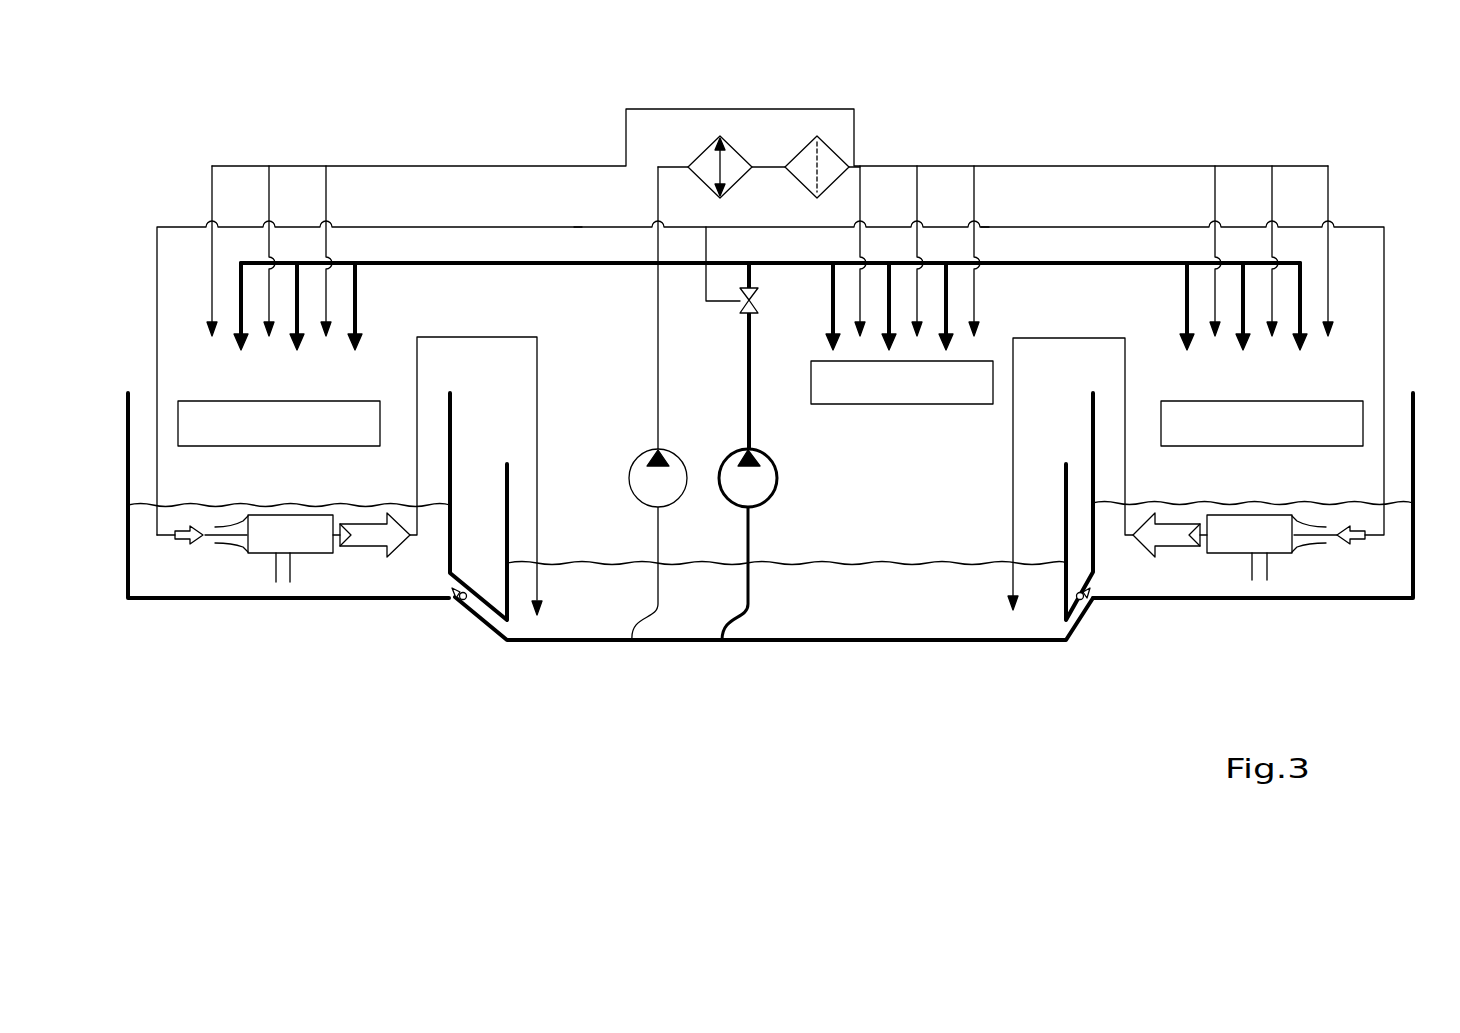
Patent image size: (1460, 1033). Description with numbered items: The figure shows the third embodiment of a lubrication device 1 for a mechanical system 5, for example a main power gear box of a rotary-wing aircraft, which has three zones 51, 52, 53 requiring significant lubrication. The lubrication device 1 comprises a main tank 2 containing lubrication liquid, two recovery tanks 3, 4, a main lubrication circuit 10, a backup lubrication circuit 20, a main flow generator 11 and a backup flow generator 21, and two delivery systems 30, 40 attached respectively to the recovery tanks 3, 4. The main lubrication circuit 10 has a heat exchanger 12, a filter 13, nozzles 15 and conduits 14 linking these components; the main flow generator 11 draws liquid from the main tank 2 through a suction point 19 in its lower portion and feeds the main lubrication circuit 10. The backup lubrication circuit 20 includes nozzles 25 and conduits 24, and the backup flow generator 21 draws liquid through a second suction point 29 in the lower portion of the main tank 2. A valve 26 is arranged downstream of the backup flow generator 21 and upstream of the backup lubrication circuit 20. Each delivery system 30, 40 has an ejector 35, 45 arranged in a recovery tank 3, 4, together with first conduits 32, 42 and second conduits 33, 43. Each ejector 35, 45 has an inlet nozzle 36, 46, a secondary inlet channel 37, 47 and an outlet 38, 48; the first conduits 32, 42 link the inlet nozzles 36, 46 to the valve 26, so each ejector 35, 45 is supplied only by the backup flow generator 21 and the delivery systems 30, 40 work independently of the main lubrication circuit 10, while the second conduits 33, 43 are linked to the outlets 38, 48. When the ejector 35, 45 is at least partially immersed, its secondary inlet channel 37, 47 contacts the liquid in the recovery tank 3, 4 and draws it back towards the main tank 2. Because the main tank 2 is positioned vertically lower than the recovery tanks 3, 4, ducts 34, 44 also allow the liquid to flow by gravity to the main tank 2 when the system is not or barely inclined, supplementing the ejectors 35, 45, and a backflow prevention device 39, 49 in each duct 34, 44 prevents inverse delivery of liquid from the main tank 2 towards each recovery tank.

The lubrication device 1 is at (546, 732).
The main tank 2 is at (835, 644).
The recovery tank 3 is at (1413, 592).
The recovery tank 4 is at (185, 600).
The mechanical system 5 is at (886, 435).
The main lubrication circuit 10 is at (1113, 140).
The main flow generator 11 is at (640, 452).
The heat exchanger 12 is at (703, 153).
The filter 13 is at (797, 153).
The conduits 14 is at (497, 166).
The nozzles 15 is at (322, 328).
The suction point 19 is at (632, 640).
The backup lubrication circuit 20 is at (1103, 250).
The backup flow generator 21 is at (730, 452).
The conduits 24 is at (563, 265).
The nozzles 25 is at (246, 352).
The valve 26 is at (738, 303).
The suction point 29 is at (722, 640).
The delivery system 30 is at (1350, 478).
The first conduit 32 is at (985, 227).
The second conduit 33 is at (1125, 352).
The duct 34 is at (1080, 642).
The ejector 35 is at (1258, 530).
The inlet nozzle 36 is at (1318, 547).
The secondary inlet channel 37 is at (1260, 570).
The outlet 38 is at (1192, 550).
The backflow prevention device 39 is at (1082, 610).
The delivery system 40 is at (380, 476).
The first conduit 42 is at (578, 227).
The second conduit 43 is at (417, 362).
The duct 44 is at (497, 640).
The ejector 45 is at (290, 530).
The inlet nozzle 46 is at (225, 555).
The secondary inlet channel 47 is at (285, 570).
The outlet 48 is at (335, 555).
The backflow prevention device 49 is at (475, 610).
The zone 51 is at (811, 388).
The zone 52 is at (1245, 446).
The zone 53 is at (246, 446).